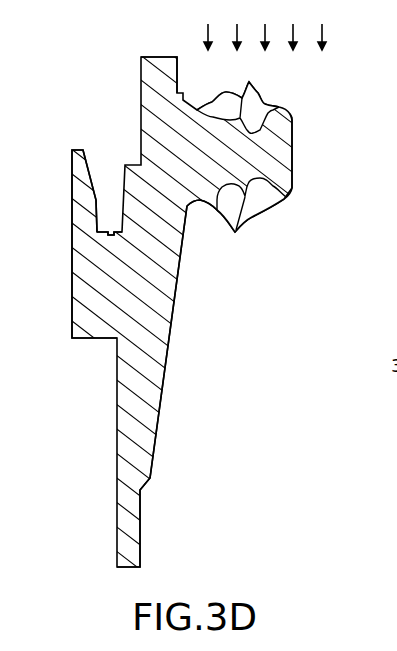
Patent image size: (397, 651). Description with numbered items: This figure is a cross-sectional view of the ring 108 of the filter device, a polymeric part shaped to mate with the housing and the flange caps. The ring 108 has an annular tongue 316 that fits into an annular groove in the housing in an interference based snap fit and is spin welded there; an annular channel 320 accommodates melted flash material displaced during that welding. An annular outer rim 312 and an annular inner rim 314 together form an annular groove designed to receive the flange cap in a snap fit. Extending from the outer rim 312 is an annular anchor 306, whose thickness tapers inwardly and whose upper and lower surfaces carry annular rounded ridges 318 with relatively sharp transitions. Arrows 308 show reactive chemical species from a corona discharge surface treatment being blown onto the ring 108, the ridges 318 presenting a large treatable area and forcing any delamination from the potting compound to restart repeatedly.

The ring 108 is at (300, 213).
The annular anchor 306 is at (293, 152).
The arrows 308 is at (265, 25).
The annular outer rim 312 is at (72, 190).
The annular inner rim 314 is at (141, 63).
The annular tongue 316 is at (158, 420).
The annular rounded ridges 318 is at (239, 158).
The annular channel 320 is at (111, 235).